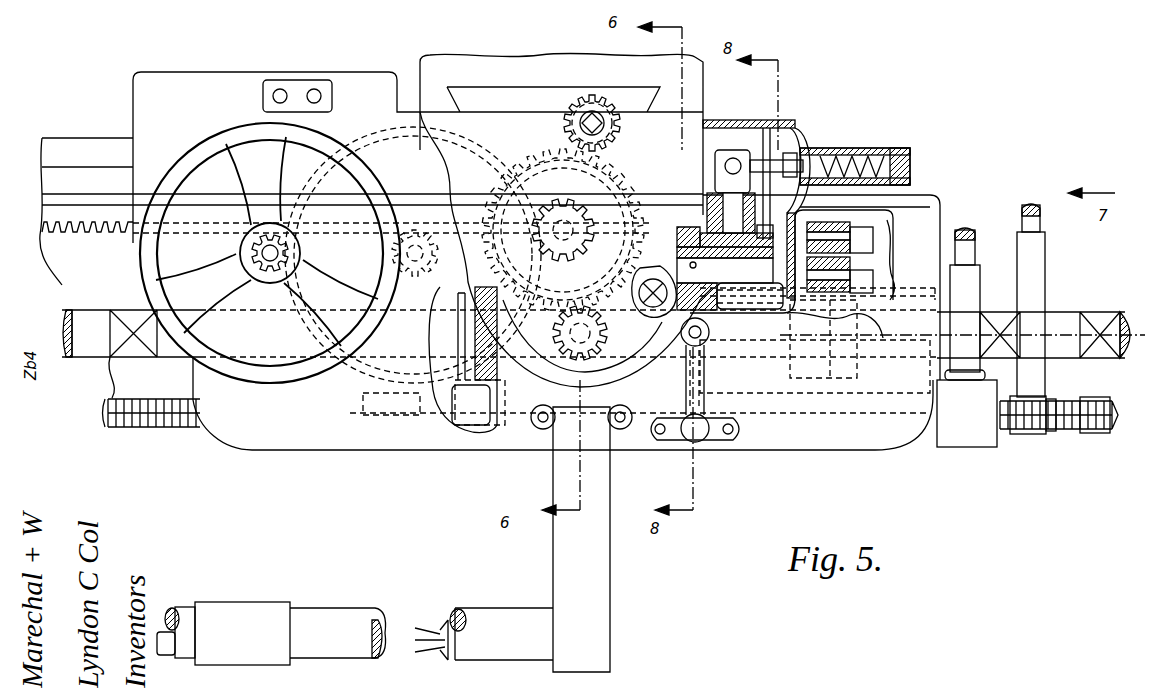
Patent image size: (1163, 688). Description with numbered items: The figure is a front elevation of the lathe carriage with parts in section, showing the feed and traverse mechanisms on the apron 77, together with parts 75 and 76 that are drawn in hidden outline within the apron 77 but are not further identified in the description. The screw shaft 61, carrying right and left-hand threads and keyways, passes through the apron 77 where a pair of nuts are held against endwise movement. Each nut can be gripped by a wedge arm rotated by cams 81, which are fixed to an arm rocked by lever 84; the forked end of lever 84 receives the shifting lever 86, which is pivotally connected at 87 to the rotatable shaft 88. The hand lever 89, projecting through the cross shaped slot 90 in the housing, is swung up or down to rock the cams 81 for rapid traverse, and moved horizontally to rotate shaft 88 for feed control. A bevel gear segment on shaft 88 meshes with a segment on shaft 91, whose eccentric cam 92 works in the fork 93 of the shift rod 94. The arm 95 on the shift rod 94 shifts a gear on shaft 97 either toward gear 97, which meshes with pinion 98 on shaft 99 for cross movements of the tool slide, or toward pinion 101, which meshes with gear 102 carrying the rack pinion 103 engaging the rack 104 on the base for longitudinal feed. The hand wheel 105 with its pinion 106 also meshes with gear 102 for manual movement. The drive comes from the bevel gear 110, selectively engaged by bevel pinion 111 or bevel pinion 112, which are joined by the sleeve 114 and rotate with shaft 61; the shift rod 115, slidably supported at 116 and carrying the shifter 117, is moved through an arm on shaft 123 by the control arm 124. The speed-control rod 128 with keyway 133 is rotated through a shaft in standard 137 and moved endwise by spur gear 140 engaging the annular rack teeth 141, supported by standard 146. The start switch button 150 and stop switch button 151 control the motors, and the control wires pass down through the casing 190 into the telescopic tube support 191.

The shaft 61 is at (140, 357).
The hidden cylinder 75 is at (790, 370).
The hidden housing 76 is at (895, 350).
The apron 77 is at (880, 322).
The cams 81 is at (875, 235).
The lever 84 is at (767, 150).
The shifting lever 86 is at (797, 155).
The pivotal connection 87 is at (745, 120).
The rotatable shaft 88 is at (722, 190).
The hand lever 89 is at (895, 148).
The cross shaped slot 90 is at (805, 135).
The shaft 91 is at (750, 296).
The eccentric cam 92 is at (642, 272).
The fork 93 is at (647, 305).
The shift rod 94 is at (608, 337).
The arm 95 is at (613, 183).
The gear 97 is at (533, 150).
The pinion 98 is at (617, 140).
The shaft 99 is at (590, 118).
The pinion 101 is at (597, 200).
The gear 102 is at (470, 140).
The rack pinion 103 is at (415, 230).
The rack 104 is at (92, 232).
The hand wheel 105 is at (210, 140).
The pinion 106 is at (252, 251).
The bevel gear 110 is at (547, 363).
The bevel pinion 111 is at (470, 382).
The bevel pinion 112 is at (705, 368).
The sleeve 114 is at (532, 420).
The shift rod 115 is at (465, 425).
The slidable support 116 is at (375, 418).
The shifter 117 is at (435, 410).
The shaft 123 is at (710, 332).
The control arm 124 is at (710, 415).
The rod 128 is at (1088, 430).
The keyway 133 is at (1087, 398).
The standard 137 is at (980, 285).
The spur gear 140 is at (1020, 434).
The annular rack teeth 141 is at (1051, 432).
The standard 146 is at (1045, 245).
The start switch button 150 is at (278, 89).
The stop switch button 151 is at (316, 89).
The casing 190 is at (610, 562).
The telescopic tube support 191 is at (323, 606).